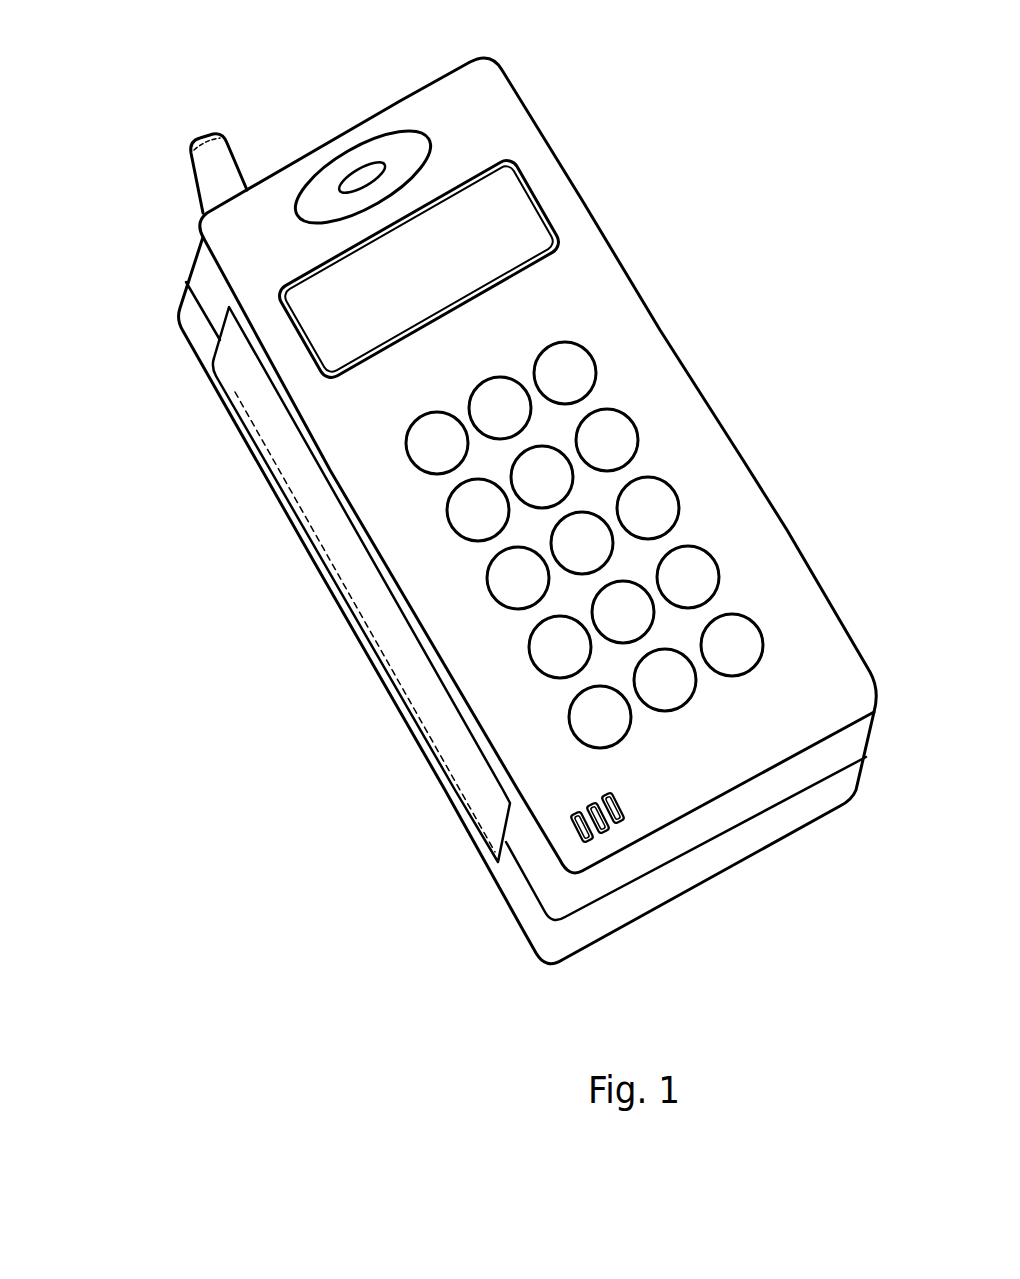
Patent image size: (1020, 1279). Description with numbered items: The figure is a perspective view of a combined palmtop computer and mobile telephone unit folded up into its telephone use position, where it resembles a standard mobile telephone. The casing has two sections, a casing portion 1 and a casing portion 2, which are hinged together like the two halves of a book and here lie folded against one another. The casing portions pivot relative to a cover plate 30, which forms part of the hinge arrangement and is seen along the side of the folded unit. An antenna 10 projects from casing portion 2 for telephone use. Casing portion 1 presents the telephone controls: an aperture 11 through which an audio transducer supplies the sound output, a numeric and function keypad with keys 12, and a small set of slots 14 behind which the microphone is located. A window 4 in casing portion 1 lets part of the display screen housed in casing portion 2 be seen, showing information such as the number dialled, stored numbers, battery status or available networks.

The casing portion 1 is at (827, 690).
The casing portion 2 is at (832, 800).
The window 4 is at (332, 327).
The antenna 10 is at (206, 177).
The aperture 11 is at (333, 169).
The keys 12 is at (584, 507).
The slots 14 is at (618, 814).
The cover plate 30 is at (435, 721).